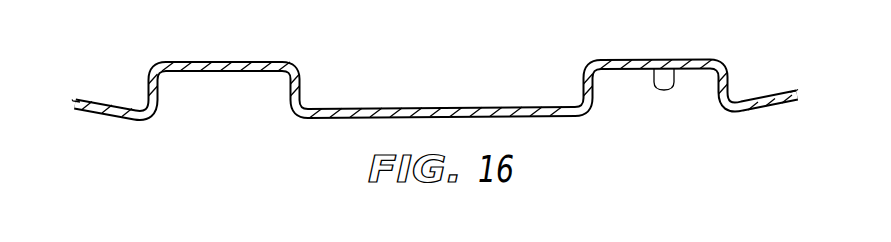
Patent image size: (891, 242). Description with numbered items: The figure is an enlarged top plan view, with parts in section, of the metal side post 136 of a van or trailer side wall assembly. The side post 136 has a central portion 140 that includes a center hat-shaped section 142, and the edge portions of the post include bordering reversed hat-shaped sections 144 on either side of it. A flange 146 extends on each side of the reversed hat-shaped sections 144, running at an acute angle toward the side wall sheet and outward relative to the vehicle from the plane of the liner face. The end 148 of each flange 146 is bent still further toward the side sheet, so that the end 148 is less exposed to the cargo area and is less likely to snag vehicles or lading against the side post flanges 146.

The side post 136 is at (463, 108).
The central portion 140 is at (340, 108).
The center hat-shaped section 142 is at (584, 103).
The reversed hat-shaped section 144 is at (212, 71).
The flange 146 is at (125, 119).
The end of the flange 148 is at (75, 97).